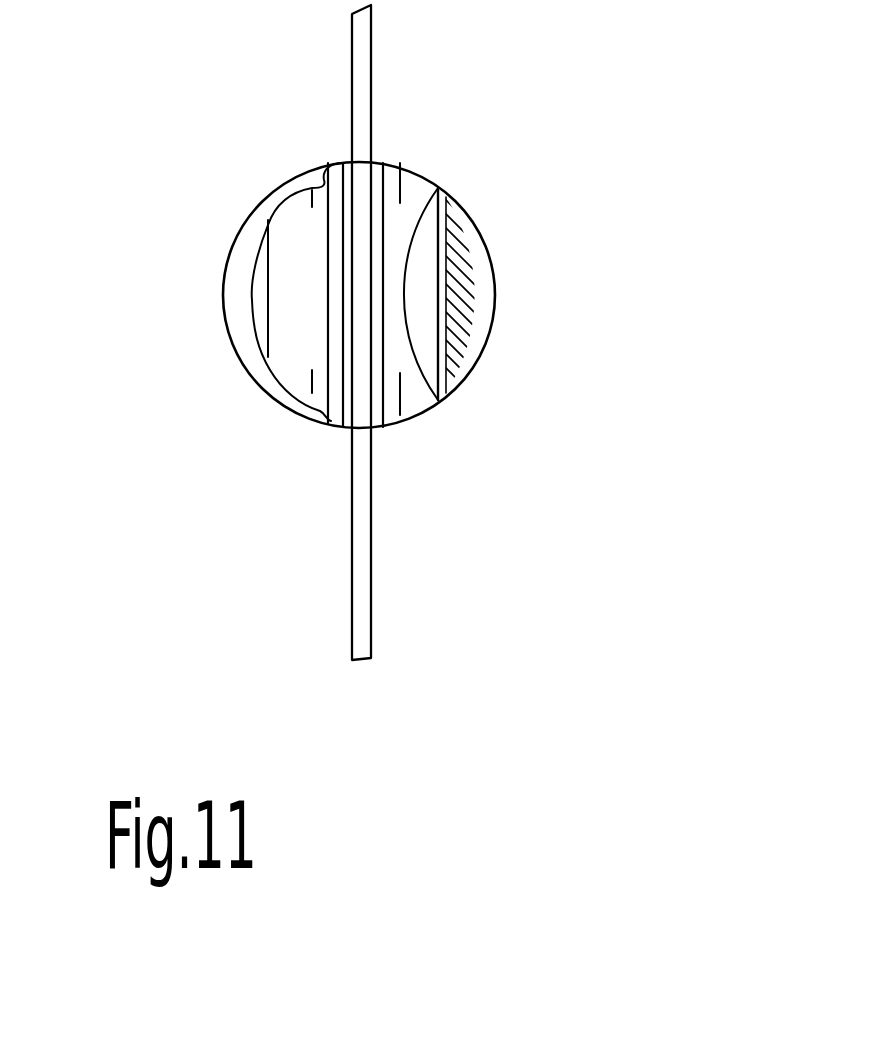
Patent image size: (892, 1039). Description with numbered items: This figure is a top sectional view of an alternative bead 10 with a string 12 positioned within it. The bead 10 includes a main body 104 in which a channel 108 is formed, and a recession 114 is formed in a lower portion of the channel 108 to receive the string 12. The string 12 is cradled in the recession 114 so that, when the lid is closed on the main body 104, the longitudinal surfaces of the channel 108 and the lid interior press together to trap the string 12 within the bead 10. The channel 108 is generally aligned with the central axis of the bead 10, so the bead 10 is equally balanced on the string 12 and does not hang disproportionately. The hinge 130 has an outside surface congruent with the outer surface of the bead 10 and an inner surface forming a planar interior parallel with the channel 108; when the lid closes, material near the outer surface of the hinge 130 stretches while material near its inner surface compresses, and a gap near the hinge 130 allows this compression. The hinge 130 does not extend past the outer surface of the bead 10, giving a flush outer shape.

The bead 10 is at (256, 131).
The string 12 is at (360, 87).
The main body 104 is at (282, 395).
The channel 108 is at (300, 300).
The recession 114 is at (378, 377).
The hinge 130 is at (465, 289).